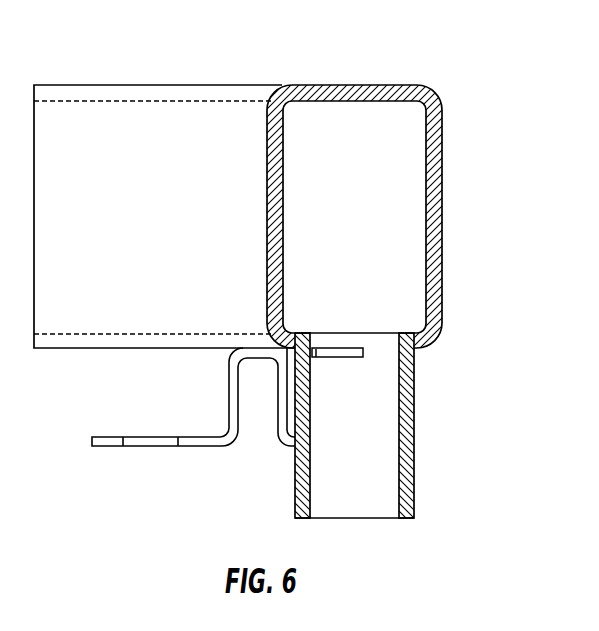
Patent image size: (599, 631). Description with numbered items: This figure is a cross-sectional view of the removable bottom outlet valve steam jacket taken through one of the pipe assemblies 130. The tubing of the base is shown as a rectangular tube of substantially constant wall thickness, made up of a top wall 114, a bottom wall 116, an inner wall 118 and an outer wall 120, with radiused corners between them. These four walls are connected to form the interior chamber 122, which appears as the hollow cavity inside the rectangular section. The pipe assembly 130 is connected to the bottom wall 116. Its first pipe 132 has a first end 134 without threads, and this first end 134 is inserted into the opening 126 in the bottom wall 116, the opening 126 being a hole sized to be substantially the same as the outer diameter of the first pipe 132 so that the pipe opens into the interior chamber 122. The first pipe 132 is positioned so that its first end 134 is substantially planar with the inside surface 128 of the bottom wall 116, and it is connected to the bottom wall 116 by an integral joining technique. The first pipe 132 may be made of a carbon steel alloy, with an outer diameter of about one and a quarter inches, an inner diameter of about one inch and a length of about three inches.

The top wall 114 is at (342, 85).
The bottom wall 116 is at (417, 348).
The inner wall 118 is at (268, 223).
The outer wall 120 is at (440, 189).
The interior chamber 122 is at (357, 148).
The opening 126 is at (351, 343).
The inside surface 128 is at (287, 332).
The pipe assembly 130 is at (380, 384).
The first pipe 132 is at (295, 482).
The first end 134 is at (415, 385).